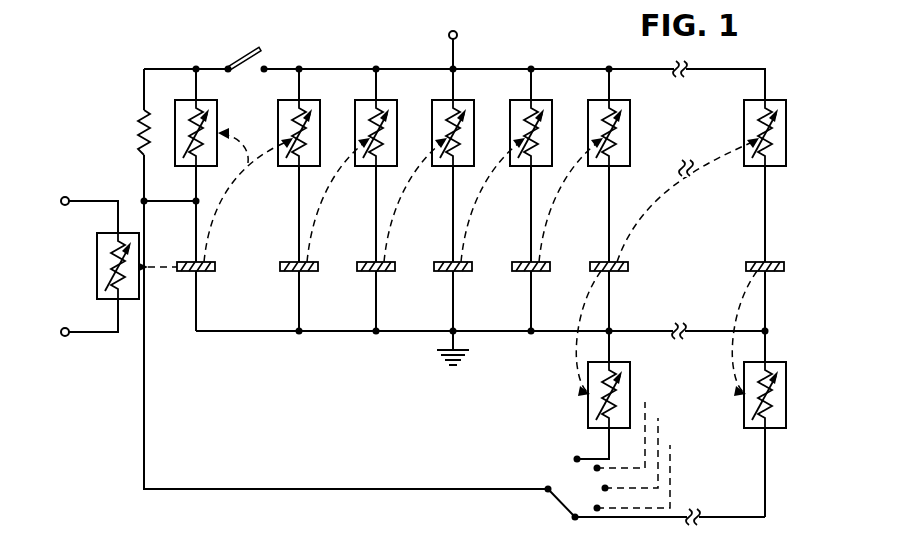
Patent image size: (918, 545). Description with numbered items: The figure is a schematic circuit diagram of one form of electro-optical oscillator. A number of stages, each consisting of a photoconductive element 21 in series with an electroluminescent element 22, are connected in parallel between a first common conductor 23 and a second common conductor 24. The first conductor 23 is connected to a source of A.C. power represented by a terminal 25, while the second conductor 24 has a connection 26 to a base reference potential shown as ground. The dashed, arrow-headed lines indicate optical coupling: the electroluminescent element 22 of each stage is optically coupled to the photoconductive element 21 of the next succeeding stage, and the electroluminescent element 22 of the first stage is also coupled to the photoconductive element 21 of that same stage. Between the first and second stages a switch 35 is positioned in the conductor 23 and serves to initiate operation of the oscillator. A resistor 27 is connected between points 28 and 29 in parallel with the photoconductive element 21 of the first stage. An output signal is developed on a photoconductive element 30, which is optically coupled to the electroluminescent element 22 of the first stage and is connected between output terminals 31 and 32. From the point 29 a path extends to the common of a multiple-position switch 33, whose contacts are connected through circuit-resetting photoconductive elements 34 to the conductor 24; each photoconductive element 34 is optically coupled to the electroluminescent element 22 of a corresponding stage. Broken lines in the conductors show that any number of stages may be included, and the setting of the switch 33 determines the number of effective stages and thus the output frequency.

The photoconductive element 21 is at (783, 100).
The electroluminescent element 22 is at (779, 262).
The first common conductor 23 is at (578, 69).
The second common conductor 24 is at (248, 331).
The terminal 25 is at (448, 36).
The connection to base reference potential 26 is at (448, 340).
The resistor 27 is at (138, 123).
The point 28 is at (196, 68).
The point 29 is at (143, 201).
The photoconductive element 30 is at (96, 256).
The output terminal 31 is at (64, 197).
The output terminal 32 is at (64, 328).
The multiple-position switch 33 is at (548, 499).
The photoconductive element 34 is at (803, 399).
The switch 35 is at (243, 54).